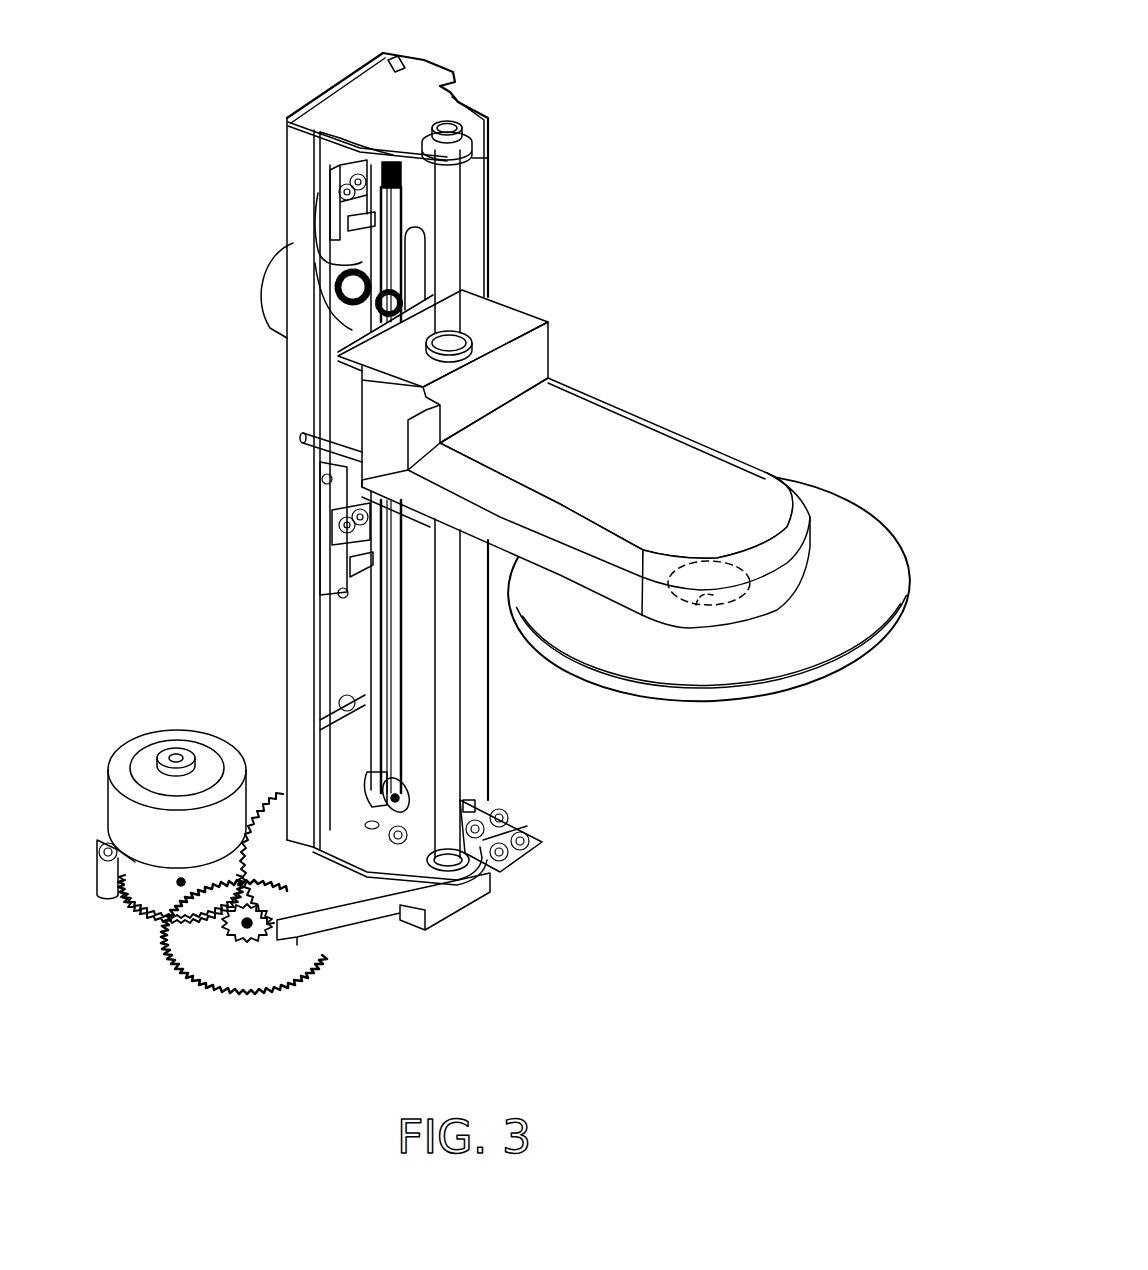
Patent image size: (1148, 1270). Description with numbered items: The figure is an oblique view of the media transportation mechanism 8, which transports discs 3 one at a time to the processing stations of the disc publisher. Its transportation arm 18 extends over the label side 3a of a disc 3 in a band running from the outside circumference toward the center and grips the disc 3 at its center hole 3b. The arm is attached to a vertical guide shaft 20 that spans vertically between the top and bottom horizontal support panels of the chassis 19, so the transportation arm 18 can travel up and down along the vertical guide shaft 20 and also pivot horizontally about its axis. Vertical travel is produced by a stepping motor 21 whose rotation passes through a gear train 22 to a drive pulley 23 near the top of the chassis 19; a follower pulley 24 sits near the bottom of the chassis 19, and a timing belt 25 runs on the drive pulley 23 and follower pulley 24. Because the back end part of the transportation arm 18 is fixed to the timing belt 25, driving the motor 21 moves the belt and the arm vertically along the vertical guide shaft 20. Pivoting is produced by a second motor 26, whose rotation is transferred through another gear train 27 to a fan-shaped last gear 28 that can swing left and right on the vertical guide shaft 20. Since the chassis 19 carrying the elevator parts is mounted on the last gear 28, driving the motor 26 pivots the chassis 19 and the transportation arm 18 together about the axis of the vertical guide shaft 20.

The media transportation mechanism 8 is at (500, 75).
The transportation arm 18 is at (555, 425).
The chassis 19 is at (490, 140).
The vertical guide shaft 20 is at (452, 203).
The motor 21 is at (275, 295).
The gear train 22 is at (328, 240).
The drive pulley 23 is at (380, 157).
The follower pulley 24 is at (387, 812).
The timing belt 25 is at (378, 625).
The motor 26 is at (138, 743).
The gear train 27 is at (135, 937).
The fan-shaped last gear 28 is at (297, 907).
The disc 3 is at (750, 657).
The label side 3a is at (788, 652).
The center hole 3b is at (710, 605).